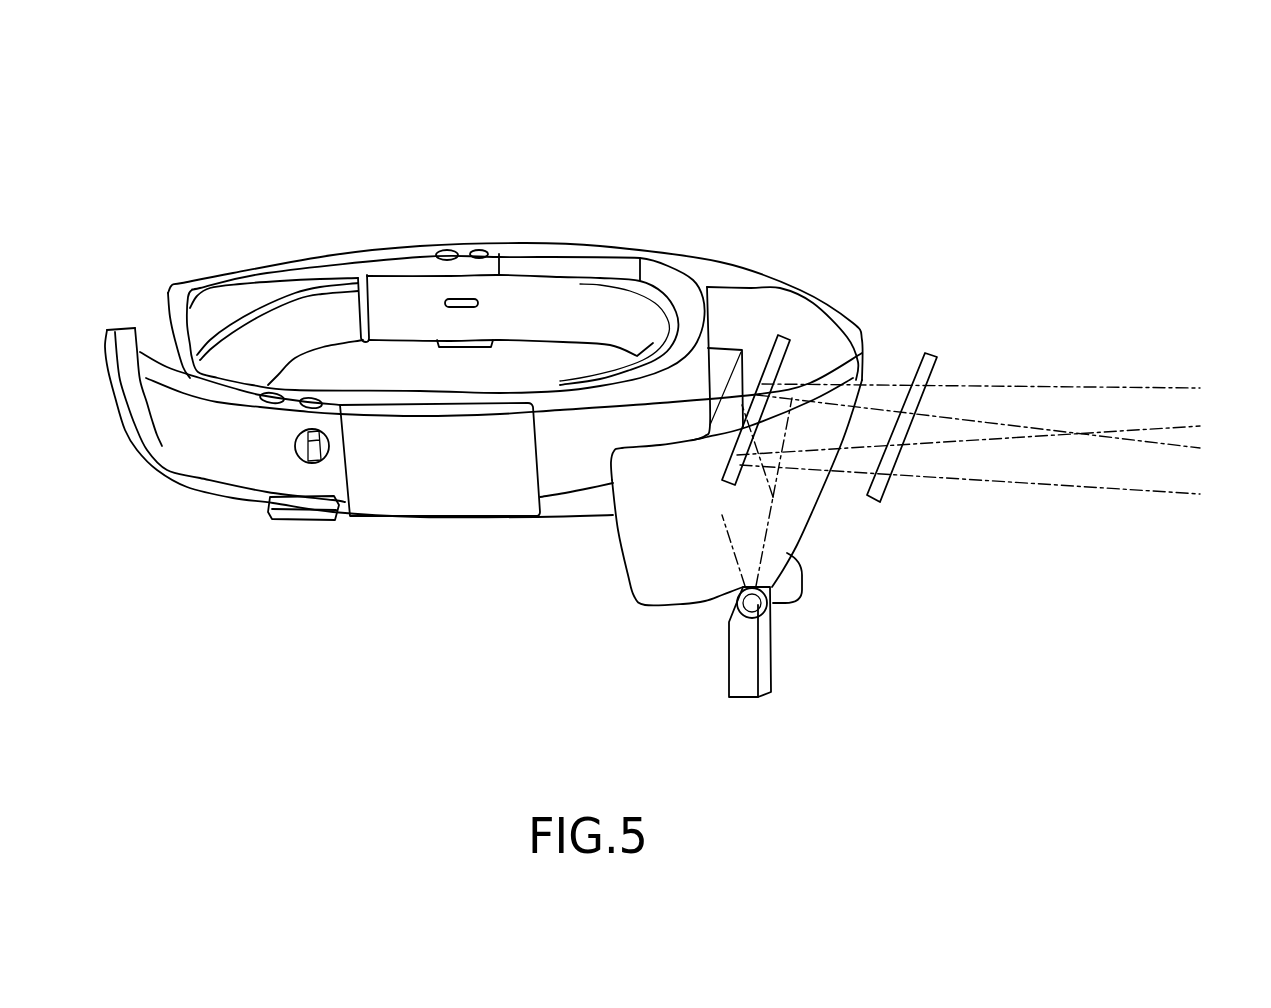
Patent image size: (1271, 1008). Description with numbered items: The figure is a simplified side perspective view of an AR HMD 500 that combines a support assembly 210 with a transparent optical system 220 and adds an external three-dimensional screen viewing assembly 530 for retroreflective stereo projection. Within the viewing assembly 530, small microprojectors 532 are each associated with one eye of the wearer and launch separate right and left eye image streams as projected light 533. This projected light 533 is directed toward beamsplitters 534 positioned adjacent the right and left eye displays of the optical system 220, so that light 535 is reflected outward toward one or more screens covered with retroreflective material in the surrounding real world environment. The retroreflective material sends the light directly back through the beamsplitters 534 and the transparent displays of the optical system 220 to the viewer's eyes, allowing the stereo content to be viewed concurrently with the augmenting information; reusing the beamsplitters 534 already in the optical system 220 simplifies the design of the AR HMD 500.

The AR HMD 500 is at (937, 160).
The support assembly 210 is at (513, 240).
The optical system 220 is at (590, 575).
The external 3D screen viewing assembly 530 is at (732, 713).
The microprojectors 532 is at (773, 673).
The projected light 533 is at (740, 548).
The beamsplitters 534 is at (788, 328).
The reflected light 535 is at (932, 365).